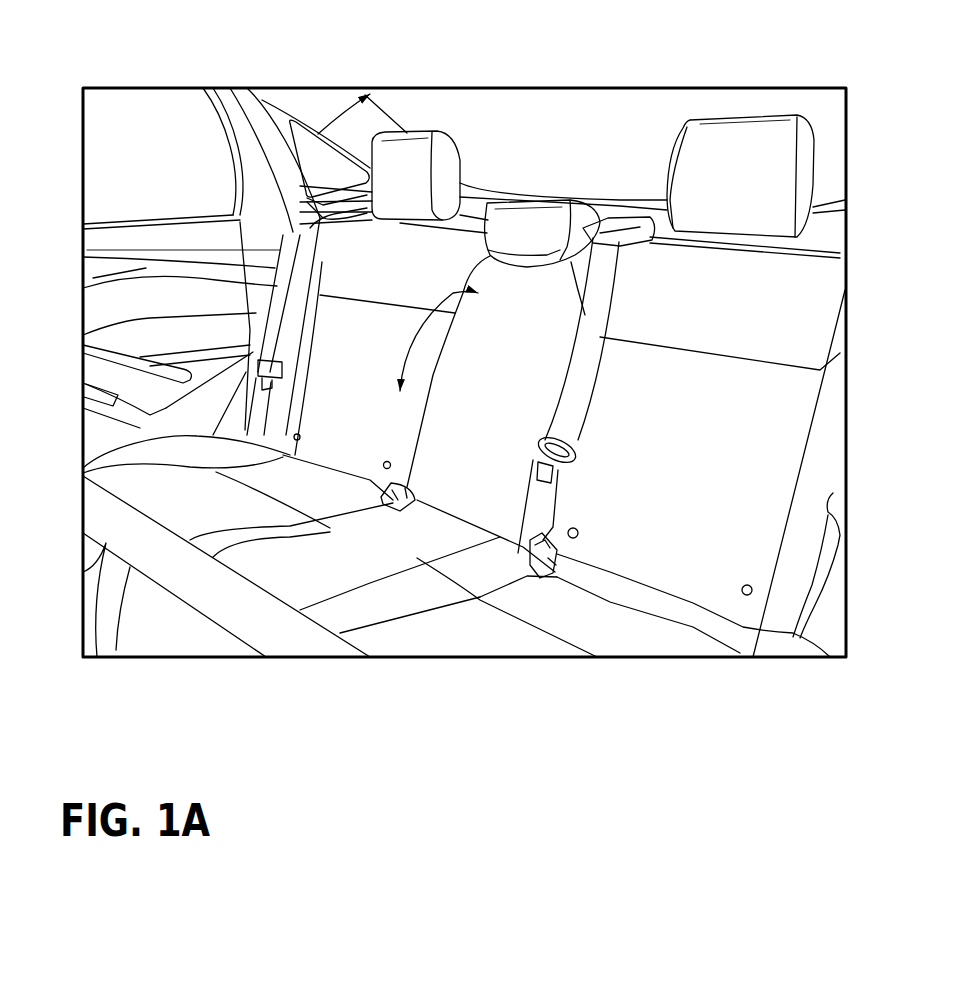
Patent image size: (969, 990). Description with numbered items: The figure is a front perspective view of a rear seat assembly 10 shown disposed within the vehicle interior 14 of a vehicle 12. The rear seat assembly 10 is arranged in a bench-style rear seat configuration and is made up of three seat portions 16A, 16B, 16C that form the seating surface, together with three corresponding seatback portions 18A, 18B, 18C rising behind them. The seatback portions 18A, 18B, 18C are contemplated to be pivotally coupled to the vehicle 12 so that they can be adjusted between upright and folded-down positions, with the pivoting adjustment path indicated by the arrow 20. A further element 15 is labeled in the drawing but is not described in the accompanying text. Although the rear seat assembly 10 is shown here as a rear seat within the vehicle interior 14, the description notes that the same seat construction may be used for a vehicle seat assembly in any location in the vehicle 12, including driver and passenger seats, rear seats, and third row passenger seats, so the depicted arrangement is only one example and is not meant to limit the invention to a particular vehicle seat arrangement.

The rear seat assembly 10 is at (323, 339).
The vehicle 12 is at (247, 152).
The vehicle interior 14 is at (170, 182).
The seat base 15 is at (163, 613).
The seat portion 16A is at (177, 488).
The seat portion 16B is at (305, 563).
The seat portion 16C is at (490, 626).
The seatback portion 18A is at (357, 265).
The seatback portion 18B is at (540, 320).
The seatback portion 18C is at (738, 437).
The arrow 20 is at (400, 358).